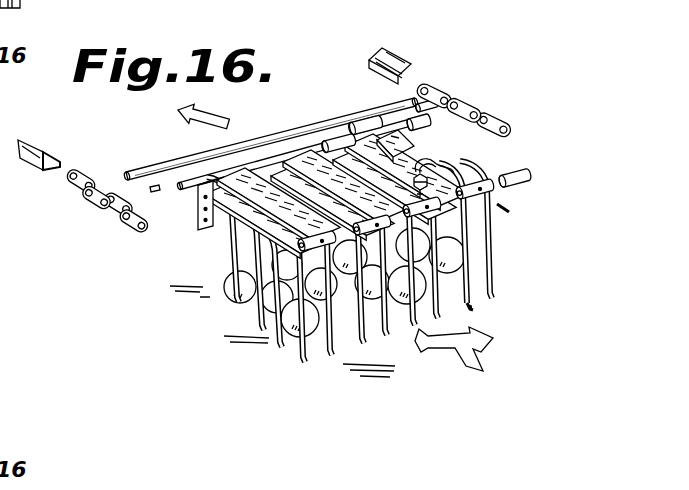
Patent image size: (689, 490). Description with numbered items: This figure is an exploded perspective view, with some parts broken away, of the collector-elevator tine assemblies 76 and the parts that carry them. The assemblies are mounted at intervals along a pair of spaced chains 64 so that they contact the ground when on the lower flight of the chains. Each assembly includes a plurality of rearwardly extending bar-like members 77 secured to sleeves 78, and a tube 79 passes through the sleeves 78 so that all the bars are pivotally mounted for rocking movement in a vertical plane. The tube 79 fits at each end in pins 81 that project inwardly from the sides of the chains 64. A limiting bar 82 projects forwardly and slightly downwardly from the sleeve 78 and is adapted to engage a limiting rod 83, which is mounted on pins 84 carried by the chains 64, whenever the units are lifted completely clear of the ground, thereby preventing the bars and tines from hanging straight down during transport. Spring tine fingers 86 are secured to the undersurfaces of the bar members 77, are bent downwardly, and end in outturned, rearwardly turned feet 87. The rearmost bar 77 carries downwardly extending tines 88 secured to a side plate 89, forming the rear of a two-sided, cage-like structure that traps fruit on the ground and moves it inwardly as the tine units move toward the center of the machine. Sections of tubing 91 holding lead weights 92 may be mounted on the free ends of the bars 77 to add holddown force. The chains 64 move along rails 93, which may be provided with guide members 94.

The chains 64 is at (451, 105).
The collector-elevator tine assemblies 76 is at (303, 358).
The bar-like members 77 is at (245, 205).
The sleeves 78 is at (357, 122).
The tube 79 is at (421, 172).
The pins 81 is at (455, 108).
The limiting bar 82 is at (167, 181).
The limiting rod 83 is at (247, 141).
The pins 84 is at (416, 99).
The spring tine fingers 86 is at (360, 312).
The feet 87 is at (471, 306).
The tines 88 is at (232, 326).
The side plate 89 is at (200, 200).
The sections of tubing 91 is at (475, 180).
The lead weights 92 is at (503, 178).
The rails 93 is at (33, 160).
The guide members 94 is at (47, 157).